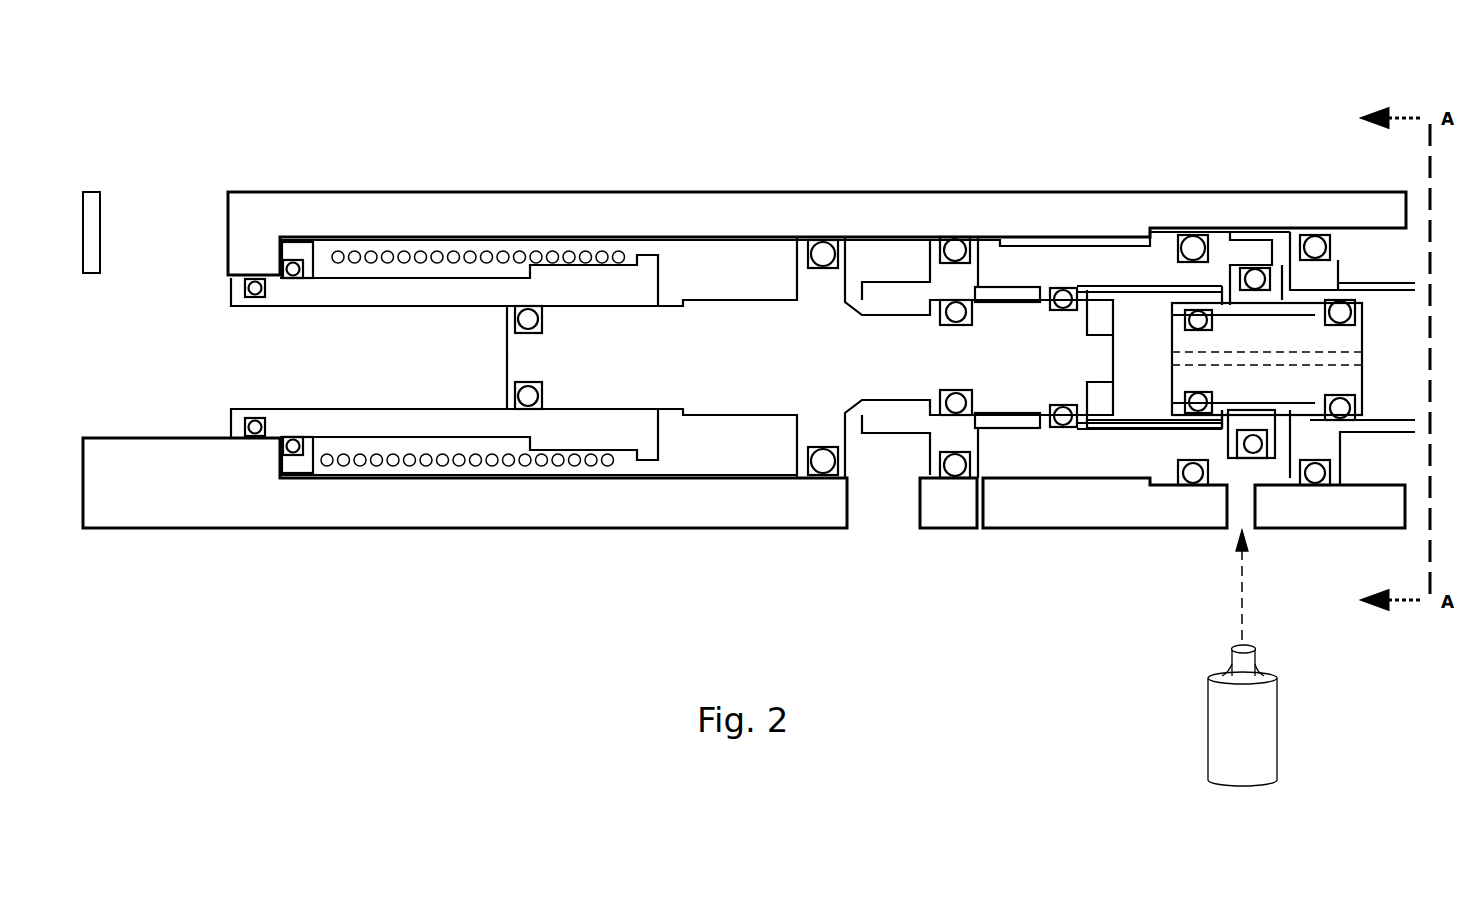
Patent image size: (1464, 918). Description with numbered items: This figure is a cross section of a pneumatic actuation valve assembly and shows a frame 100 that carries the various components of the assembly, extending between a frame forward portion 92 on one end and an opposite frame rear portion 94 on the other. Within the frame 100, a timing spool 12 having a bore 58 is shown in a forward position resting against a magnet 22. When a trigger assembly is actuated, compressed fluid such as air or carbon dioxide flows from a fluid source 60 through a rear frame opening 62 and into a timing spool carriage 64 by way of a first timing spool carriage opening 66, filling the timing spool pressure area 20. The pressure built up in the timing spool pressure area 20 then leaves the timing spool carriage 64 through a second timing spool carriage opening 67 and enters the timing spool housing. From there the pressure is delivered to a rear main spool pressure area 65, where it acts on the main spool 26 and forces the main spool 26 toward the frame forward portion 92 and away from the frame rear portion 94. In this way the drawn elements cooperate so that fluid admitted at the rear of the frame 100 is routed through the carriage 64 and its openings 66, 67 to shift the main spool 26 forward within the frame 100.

The timing spool 12 is at (1375, 403).
The timing spool pressure area 20 is at (1290, 400).
The magnet 22 is at (1114, 325).
The main spool 26 is at (705, 303).
The bore 58 is at (1355, 360).
The fluid source 60 is at (1208, 716).
The rear frame opening 62 is at (1240, 608).
The timing spool carriage 64 is at (1352, 290).
The rear main spool pressure area 65 is at (1098, 318).
The first timing spool carriage opening 66 is at (1280, 468).
The second timing spool carriage opening 67 is at (1228, 298).
The frame forward portion 92 is at (250, 105).
The frame rear portion 94 is at (1300, 105).
The frame 100 is at (815, 190).